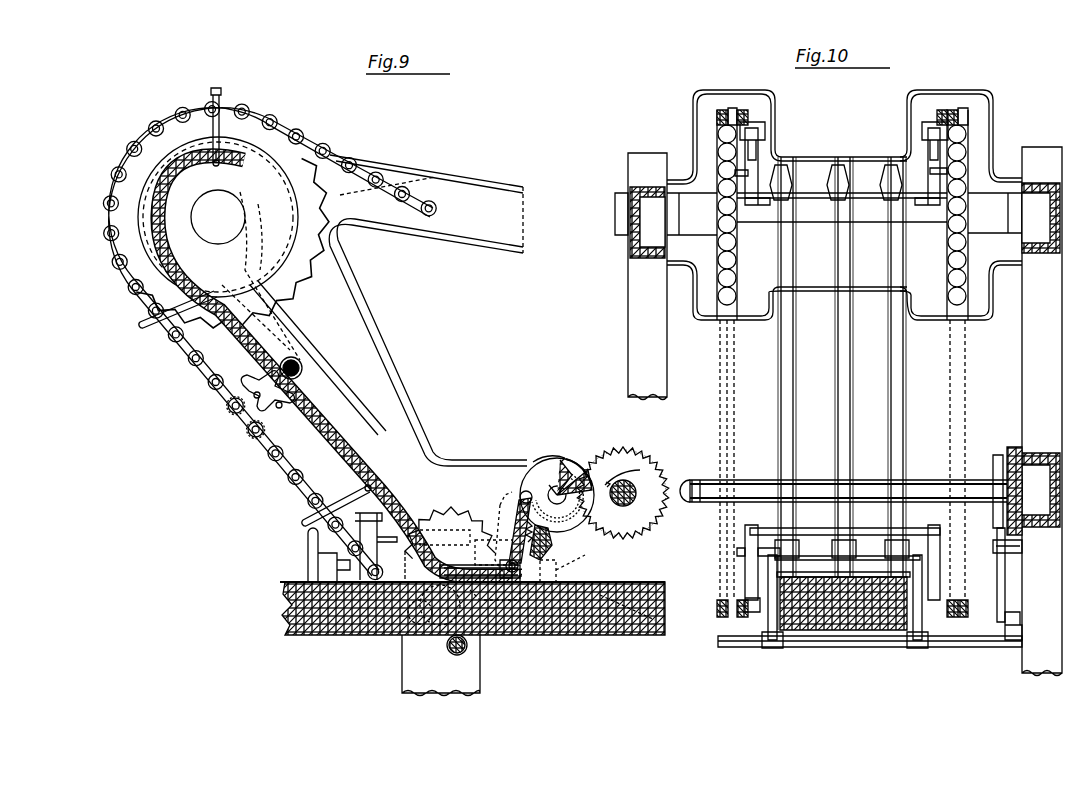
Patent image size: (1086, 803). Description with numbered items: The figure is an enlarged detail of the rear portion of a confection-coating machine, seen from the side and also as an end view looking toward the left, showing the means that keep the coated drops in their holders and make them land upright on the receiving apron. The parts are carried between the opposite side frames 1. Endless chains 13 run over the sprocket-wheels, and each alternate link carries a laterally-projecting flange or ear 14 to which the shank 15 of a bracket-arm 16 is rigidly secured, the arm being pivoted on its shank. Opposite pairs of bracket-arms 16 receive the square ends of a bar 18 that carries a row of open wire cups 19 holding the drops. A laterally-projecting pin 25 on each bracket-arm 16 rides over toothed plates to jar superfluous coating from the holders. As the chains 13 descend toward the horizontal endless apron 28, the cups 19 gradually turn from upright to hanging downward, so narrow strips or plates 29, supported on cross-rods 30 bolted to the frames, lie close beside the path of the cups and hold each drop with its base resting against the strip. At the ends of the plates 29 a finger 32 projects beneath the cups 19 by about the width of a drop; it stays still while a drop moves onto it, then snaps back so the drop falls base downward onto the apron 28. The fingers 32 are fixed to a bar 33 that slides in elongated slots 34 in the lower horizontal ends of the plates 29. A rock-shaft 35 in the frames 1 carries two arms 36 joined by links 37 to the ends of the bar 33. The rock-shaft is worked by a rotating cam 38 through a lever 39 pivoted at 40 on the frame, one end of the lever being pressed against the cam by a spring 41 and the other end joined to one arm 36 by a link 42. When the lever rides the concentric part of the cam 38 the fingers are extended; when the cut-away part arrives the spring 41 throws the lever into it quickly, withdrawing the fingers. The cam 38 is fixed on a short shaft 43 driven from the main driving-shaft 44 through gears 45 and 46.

In FIG. 9, the side frame 1 is at (428, 310).
In FIG. 10, the side frame 1 is at (630, 238).
In FIG. 9, the endless chain 13 is at (285, 243).
In FIG. 10, the endless chain 13 is at (722, 110).
In FIG. 9, the laterally-projecting flange or ear 14 is at (252, 434).
In FIG. 10, the laterally-projecting flange or ear 14 is at (743, 110).
In FIG. 9, the shank 15 is at (235, 410).
In FIG. 9, the bracket-arm 16 is at (262, 390).
In FIG. 10, the bracket-arm 16 is at (760, 160).
In FIG. 9, the bar 18 is at (300, 368).
In FIG. 10, the bar 18 is at (812, 193).
In FIG. 10, the open wire cup 19 is at (787, 170).
In FIG. 10, the laterally-projecting pin 25 is at (735, 172).
In FIG. 9, the endless apron 28 is at (450, 543).
In FIG. 10, the endless apron 28 is at (848, 600).
In FIG. 9, the strip or plate 29 is at (250, 348).
In FIG. 10, the strip or plate 29 is at (902, 405).
In FIG. 9, the cross-rod 30 is at (215, 88).
In FIG. 10, the cross-rod 30 is at (693, 105).
In FIG. 9, the finger 32 is at (567, 566).
In FIG. 9, the bar 33 is at (462, 560).
In FIG. 10, the bar 33 is at (818, 577).
In FIG. 9, the elongated slot 34 is at (506, 560).
In FIG. 9, the rock-shaft 35 is at (470, 620).
In FIG. 10, the rock-shaft 35 is at (758, 648).
In FIG. 9, the arm 36 is at (455, 637).
In FIG. 10, the arm 36 is at (770, 620).
In FIG. 9, the link 37 is at (420, 612).
In FIG. 10, the link 37 is at (770, 556).
In FIG. 9, the rotating cam 38 is at (555, 470).
In FIG. 10, the rotating cam 38 is at (998, 455).
In FIG. 9, the lever 39 is at (524, 493).
In FIG. 10, the lever 39 is at (1005, 584).
In FIG. 10, the pivot 40 is at (1022, 547).
In FIG. 9, the spring 41 is at (548, 532).
In FIG. 9, the link 42 is at (505, 622).
In FIG. 10, the link 42 is at (1012, 615).
In FIG. 9, the short shaft 43 is at (575, 468).
In FIG. 9, the main driving-shaft 44 is at (628, 490).
In FIG. 10, the main driving-shaft 44 is at (851, 479).
In FIG. 9, the gear 45 is at (640, 458).
In FIG. 10, the gear 45 is at (1018, 450).
In FIG. 9, the gear 46 is at (605, 460).